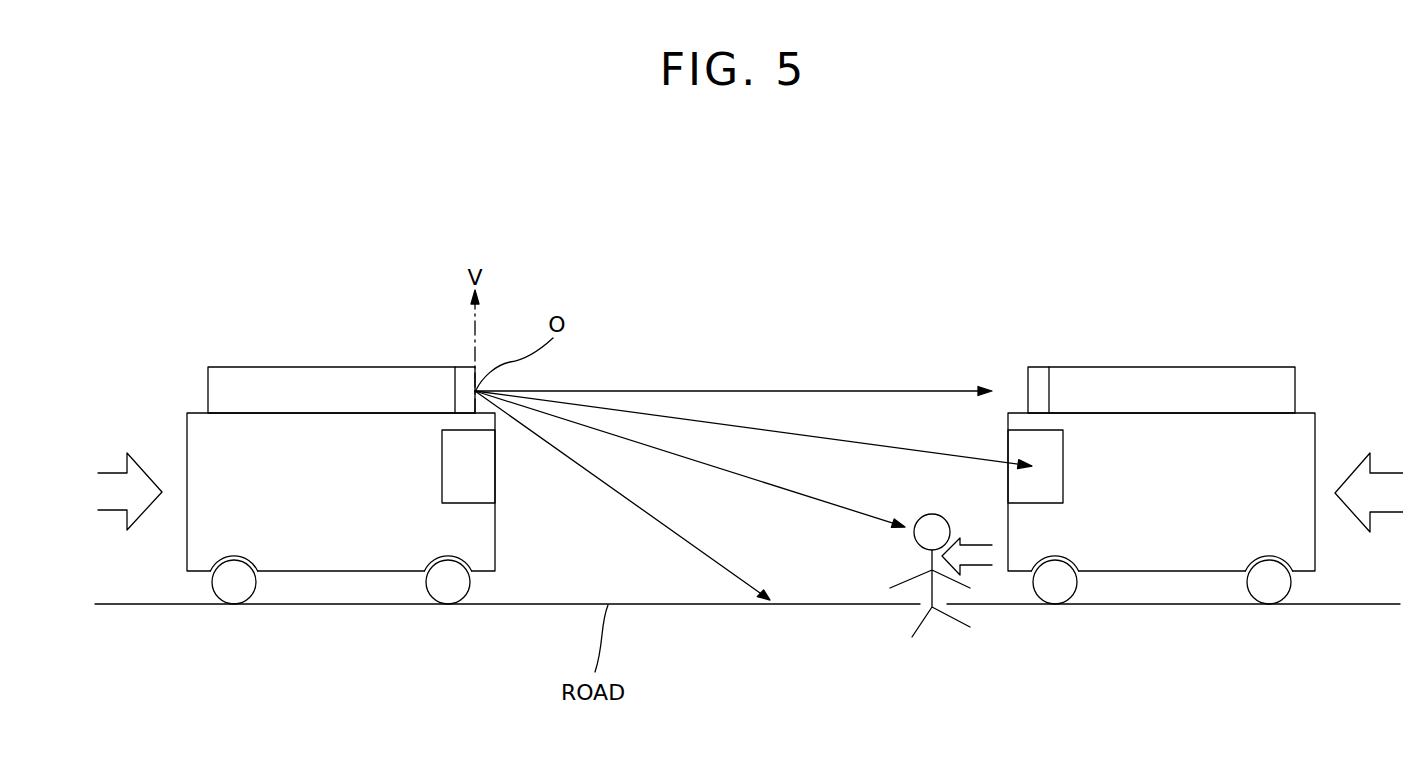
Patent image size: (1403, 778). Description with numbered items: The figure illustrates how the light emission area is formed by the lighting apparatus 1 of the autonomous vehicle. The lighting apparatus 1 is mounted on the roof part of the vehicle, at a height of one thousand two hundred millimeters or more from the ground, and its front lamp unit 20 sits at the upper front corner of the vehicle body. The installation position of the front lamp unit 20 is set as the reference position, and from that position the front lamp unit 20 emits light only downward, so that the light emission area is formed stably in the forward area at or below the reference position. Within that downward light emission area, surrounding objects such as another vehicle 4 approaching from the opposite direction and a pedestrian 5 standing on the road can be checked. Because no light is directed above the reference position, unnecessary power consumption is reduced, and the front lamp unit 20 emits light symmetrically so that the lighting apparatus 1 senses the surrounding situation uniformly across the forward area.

The lighting apparatus 1 is at (322, 352).
The front lamp unit 20 is at (461, 384).
The another vehicle 4 is at (1187, 353).
The pedestrian 5 is at (970, 629).